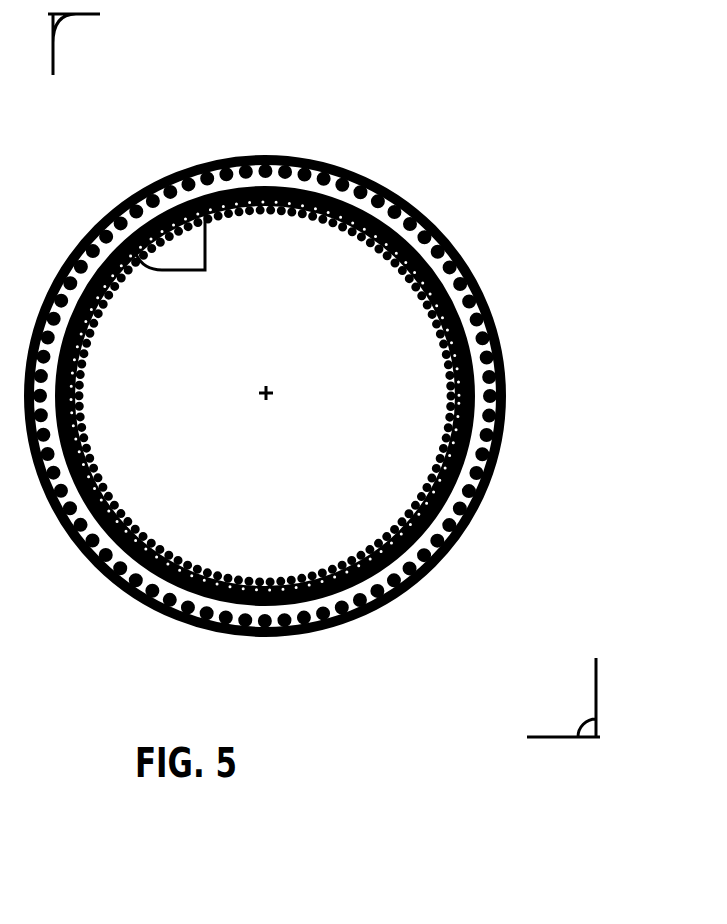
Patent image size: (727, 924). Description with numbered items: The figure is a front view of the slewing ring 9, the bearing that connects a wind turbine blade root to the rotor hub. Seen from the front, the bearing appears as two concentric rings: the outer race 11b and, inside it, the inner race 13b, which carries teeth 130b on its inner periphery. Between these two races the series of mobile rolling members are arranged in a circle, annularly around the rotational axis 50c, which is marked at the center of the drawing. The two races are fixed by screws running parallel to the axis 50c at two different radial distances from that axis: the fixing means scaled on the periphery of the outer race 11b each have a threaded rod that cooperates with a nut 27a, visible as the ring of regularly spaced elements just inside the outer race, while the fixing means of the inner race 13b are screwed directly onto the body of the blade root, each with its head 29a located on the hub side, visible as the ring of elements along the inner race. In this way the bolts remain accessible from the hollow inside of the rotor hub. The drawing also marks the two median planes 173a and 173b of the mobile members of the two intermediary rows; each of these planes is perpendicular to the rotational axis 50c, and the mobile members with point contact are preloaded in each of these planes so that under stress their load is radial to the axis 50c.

The slewing ring 9 is at (370, 150).
The outer race 11b is at (434, 221).
The inner race 13b is at (405, 276).
The nut 27a is at (496, 327).
The head 29a is at (447, 361).
The rotational axis 50c is at (258, 402).
The teeth 130b is at (206, 262).
The median plane 173a is at (99, 45).
The median plane 173b is at (555, 698).